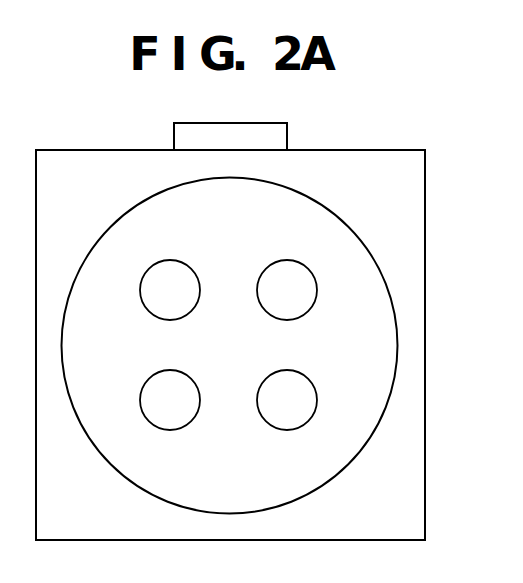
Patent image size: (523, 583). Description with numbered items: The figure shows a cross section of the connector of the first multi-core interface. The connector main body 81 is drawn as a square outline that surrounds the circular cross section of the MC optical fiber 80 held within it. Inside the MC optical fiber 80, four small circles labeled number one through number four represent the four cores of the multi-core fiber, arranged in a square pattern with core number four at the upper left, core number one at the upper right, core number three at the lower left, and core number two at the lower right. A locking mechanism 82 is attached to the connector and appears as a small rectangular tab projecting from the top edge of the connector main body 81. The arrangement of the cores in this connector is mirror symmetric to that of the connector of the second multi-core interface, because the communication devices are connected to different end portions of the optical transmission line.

The MC optical fiber 80 is at (345, 223).
The connector main body 81 is at (425, 263).
The locking mechanism 82 is at (288, 135).